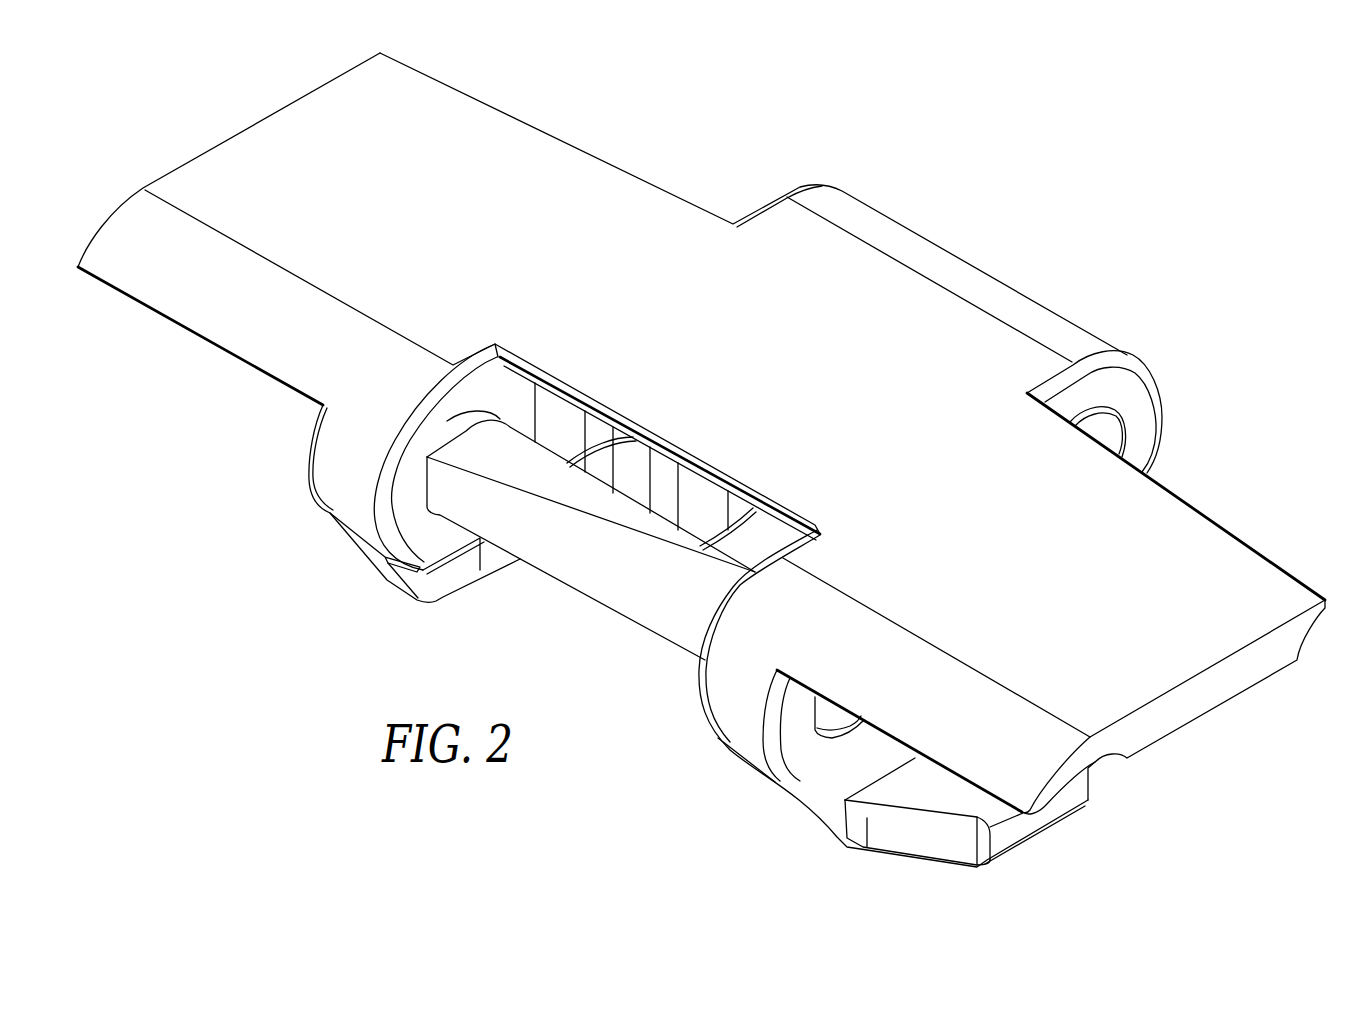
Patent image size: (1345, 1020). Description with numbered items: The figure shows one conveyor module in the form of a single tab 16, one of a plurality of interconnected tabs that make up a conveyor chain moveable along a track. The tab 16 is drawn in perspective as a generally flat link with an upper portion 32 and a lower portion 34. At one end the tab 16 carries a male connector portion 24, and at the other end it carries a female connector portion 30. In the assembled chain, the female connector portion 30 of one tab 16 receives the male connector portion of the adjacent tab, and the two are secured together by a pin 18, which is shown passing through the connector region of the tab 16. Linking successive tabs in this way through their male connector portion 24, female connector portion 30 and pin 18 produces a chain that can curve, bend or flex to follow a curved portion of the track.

The tab 16 is at (547, 109).
The pin 18 is at (567, 566).
The male connector portion 24 is at (1008, 287).
The female connector portion 30 is at (727, 755).
The upper portion 32 is at (1245, 572).
The lower portion 34 is at (1003, 838).